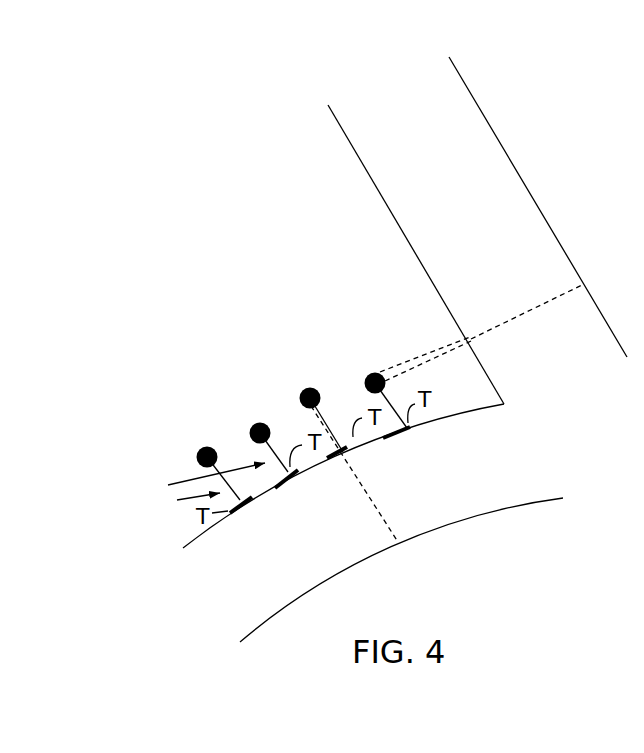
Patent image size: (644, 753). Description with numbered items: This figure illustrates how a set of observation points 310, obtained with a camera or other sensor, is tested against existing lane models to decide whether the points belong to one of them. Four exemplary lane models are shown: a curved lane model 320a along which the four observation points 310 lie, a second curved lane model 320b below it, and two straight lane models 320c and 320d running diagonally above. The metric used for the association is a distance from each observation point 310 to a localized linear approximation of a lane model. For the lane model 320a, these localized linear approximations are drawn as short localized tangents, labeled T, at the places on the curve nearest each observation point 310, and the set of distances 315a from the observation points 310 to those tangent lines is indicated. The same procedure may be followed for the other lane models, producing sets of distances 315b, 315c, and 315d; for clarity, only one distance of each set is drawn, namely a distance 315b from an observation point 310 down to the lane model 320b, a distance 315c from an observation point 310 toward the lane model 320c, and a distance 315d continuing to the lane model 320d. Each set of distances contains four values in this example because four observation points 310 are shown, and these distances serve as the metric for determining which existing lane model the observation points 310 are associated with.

The observation points 310 is at (288, 400).
The set of distances 315a is at (186, 486).
The distance 315b is at (360, 482).
The distance 315c is at (405, 362).
The distance 315d is at (502, 325).
The lane model 320a is at (455, 422).
The lane model 320b is at (515, 512).
The lane model 320c is at (343, 143).
The lane model 320d is at (523, 178).